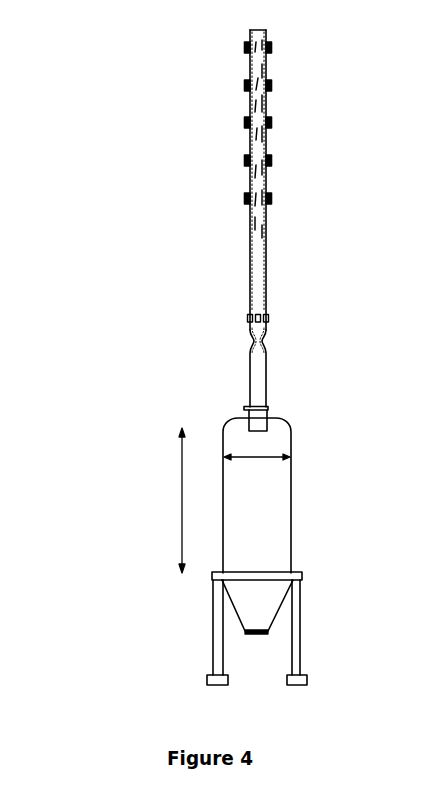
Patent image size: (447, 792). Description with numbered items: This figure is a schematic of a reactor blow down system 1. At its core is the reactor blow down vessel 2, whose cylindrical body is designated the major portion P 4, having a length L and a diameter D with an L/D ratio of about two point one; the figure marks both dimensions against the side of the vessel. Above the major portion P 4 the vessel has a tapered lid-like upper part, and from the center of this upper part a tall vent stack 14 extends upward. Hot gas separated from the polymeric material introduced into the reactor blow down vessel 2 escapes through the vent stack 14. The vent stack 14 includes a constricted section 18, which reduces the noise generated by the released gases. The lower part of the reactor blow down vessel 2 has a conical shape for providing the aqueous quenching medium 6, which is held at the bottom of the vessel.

The reactor blow down system 1 is at (160, 349).
The reactor blow down vessel 2 is at (272, 513).
The major portion P 4 is at (137, 435).
The aqueous quenching medium 6 is at (262, 602).
The vent stack 14 is at (260, 265).
The constricted section 18 is at (265, 339).